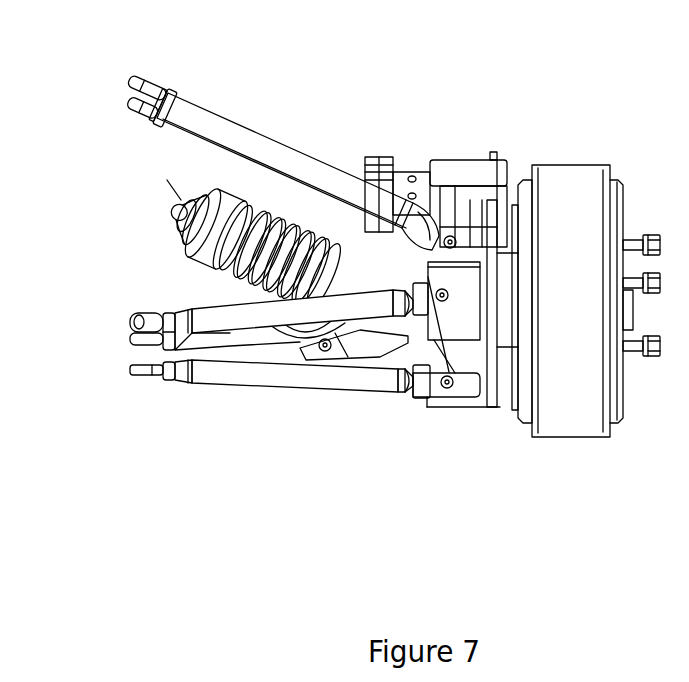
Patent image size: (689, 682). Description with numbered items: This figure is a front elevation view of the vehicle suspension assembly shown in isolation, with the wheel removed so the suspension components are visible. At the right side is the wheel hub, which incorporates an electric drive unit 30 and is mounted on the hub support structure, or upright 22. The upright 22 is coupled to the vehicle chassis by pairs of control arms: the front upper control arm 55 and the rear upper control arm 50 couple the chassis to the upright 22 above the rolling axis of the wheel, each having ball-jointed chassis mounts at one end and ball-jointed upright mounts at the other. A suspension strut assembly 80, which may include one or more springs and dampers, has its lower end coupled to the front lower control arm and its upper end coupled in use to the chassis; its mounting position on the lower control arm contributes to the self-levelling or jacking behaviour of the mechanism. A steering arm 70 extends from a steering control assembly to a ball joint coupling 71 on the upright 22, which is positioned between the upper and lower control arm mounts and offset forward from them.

The rear upper control arm 50 is at (242, 140).
The suspension strut assembly 80 is at (277, 217).
The front upper control arm 55 is at (228, 318).
The steering arm 70 is at (215, 375).
The ball joint coupling 71 is at (435, 395).
The upright 22 is at (460, 360).
The electric drive unit 30 is at (563, 408).